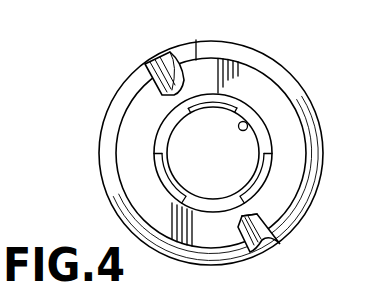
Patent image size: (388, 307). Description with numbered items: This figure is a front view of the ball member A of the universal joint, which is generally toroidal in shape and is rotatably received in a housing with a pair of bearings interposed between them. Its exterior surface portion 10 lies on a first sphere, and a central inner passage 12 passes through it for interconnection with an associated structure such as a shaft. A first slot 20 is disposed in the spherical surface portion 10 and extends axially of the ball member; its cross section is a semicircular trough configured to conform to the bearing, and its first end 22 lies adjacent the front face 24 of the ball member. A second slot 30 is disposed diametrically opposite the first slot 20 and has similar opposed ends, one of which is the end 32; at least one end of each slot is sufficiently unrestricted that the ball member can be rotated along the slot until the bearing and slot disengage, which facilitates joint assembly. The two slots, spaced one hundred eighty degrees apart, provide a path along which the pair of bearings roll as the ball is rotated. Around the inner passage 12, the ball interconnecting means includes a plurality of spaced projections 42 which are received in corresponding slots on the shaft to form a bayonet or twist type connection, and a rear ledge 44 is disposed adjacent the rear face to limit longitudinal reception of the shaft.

The exterior surface portion 10 is at (241, 53).
The inner passage 12 is at (246, 123).
The first slot 20 is at (163, 65).
The first end 22 is at (196, 40).
The front face 24 is at (287, 133).
The second slot 30 is at (258, 241).
The opposed end 32 is at (257, 215).
The spaced projections 42 is at (213, 106).
The rear ledge 44 is at (212, 203).
The ball member A is at (106, 84).